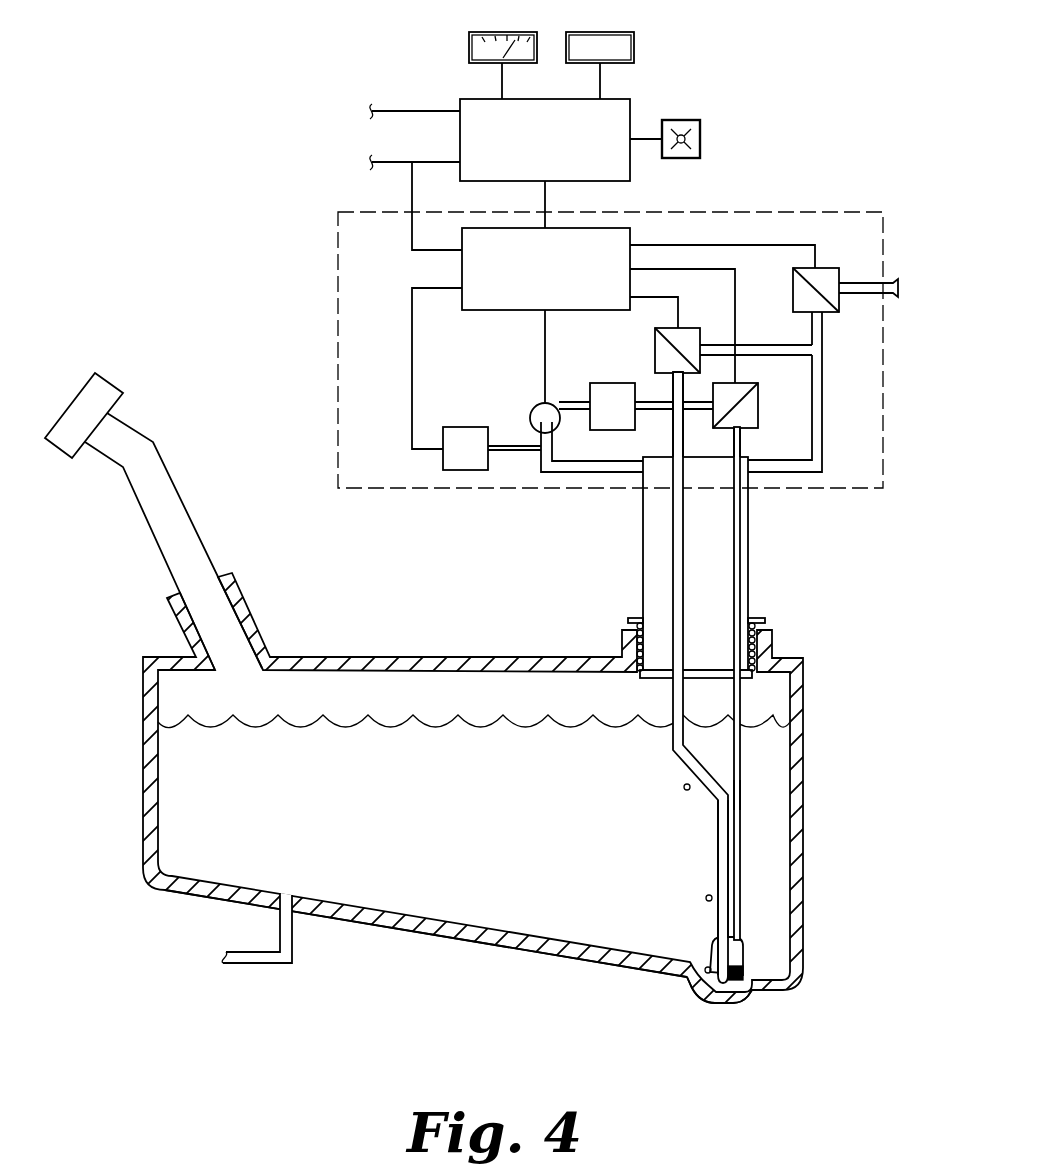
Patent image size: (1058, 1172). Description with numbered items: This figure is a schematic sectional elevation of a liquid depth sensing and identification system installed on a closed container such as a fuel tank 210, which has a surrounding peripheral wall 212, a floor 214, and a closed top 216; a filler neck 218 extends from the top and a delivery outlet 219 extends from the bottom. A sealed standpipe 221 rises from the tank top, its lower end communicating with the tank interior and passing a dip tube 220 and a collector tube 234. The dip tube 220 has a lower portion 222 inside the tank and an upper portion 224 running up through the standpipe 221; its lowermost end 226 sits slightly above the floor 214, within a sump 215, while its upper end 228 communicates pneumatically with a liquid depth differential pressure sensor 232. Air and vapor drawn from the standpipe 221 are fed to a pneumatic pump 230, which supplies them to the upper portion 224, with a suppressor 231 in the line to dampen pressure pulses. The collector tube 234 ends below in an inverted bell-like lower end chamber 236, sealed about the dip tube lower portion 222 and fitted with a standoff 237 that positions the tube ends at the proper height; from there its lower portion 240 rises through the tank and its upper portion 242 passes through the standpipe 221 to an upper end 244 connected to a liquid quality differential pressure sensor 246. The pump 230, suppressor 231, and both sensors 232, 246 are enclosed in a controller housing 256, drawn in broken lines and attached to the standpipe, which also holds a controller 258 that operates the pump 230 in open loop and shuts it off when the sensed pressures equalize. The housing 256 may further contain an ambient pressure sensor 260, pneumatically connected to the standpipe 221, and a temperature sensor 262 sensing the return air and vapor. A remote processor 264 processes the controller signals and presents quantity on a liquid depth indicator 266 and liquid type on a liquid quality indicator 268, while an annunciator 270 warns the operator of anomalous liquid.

The fuel tank 210 is at (367, 1008).
The peripheral wall 212 is at (143, 800).
The floor 214 is at (577, 963).
The sump 215 is at (735, 1005).
The closed top 216 is at (390, 657).
The filler neck 218 is at (145, 520).
The delivery outlet 219 is at (247, 963).
The dip tube 220 is at (673, 703).
The standpipe 221 is at (643, 597).
The lower portion of the dip tube 222 is at (713, 917).
The upper portion of the dip tube 224 is at (643, 555).
The lowermost end of the dip tube 226 is at (707, 997).
The upper end of the dip tube 228 is at (675, 388).
The pneumatic pump 230 is at (530, 418).
The suppressor 231 is at (600, 432).
The liquid depth differential pressure sensor 232 is at (655, 348).
The collector tube 234 is at (740, 700).
The lower end chamber 236 is at (710, 953).
The standoff 237 is at (743, 968).
The lower portion of the collector tube 240 is at (740, 793).
The upper portion of the collector tube 242 is at (748, 547).
The upper end of the collector tube 244 is at (740, 445).
The liquid quality differential pressure sensor 246 is at (758, 397).
The controller housing 256 is at (338, 300).
The controller 258 is at (638, 305).
The ambient pressure sensor 260 is at (827, 267).
The temperature sensor 262 is at (443, 458).
The processor 264 is at (545, 140).
The liquid depth indicator 266 is at (468, 48).
The liquid quality indicator 268 is at (636, 45).
The annunciator 270 is at (702, 133).